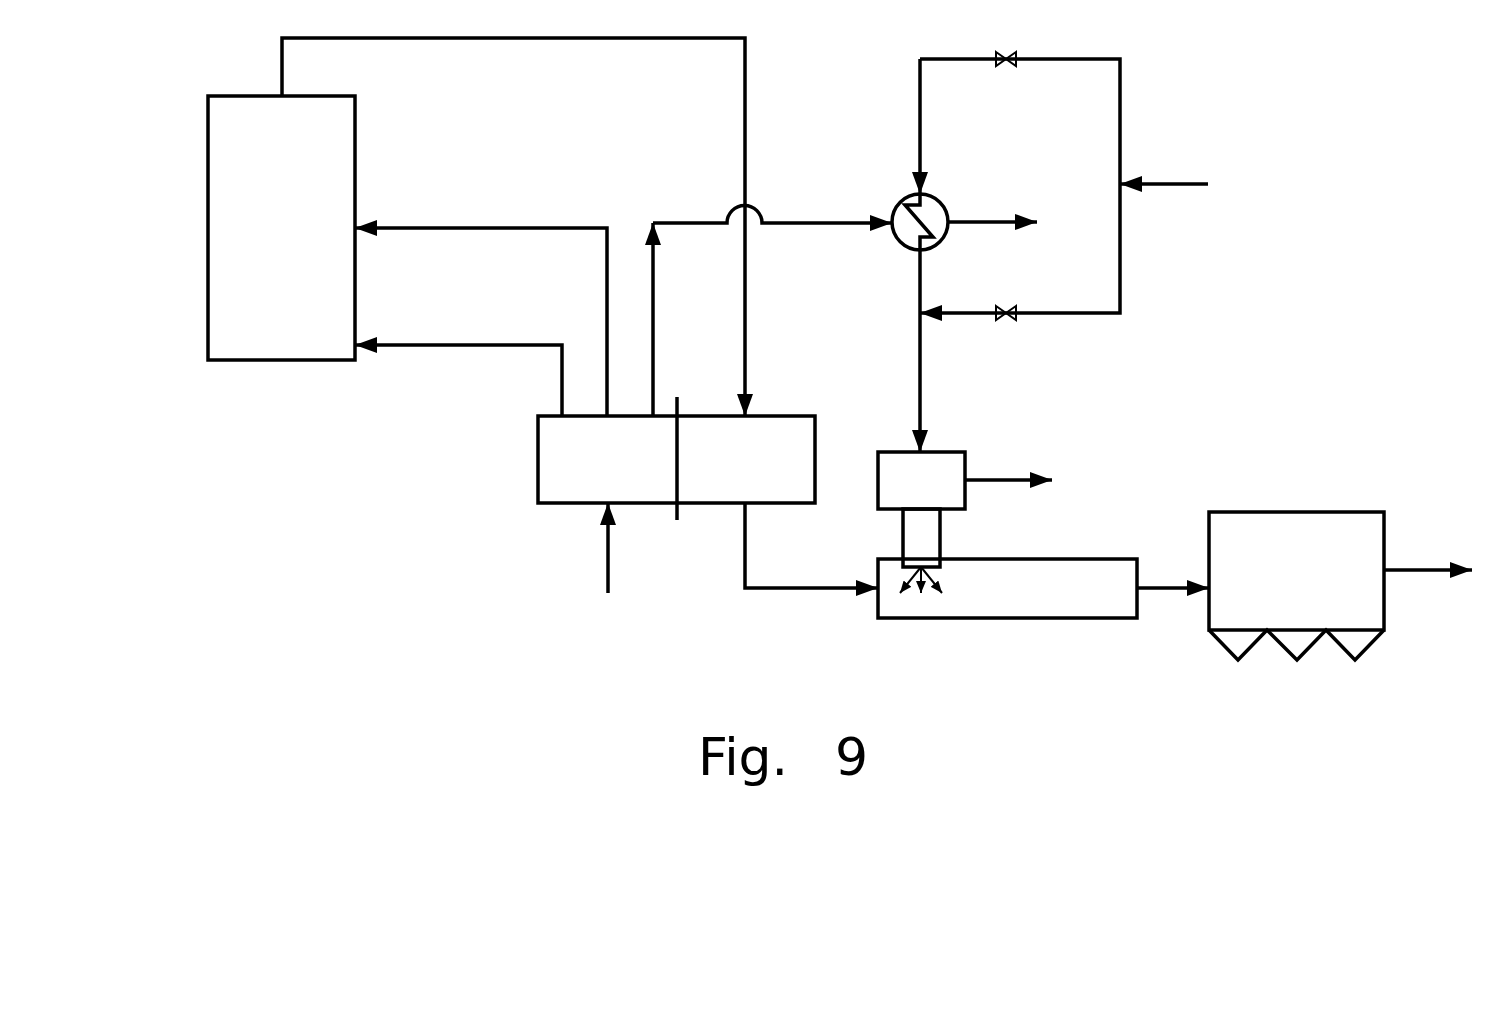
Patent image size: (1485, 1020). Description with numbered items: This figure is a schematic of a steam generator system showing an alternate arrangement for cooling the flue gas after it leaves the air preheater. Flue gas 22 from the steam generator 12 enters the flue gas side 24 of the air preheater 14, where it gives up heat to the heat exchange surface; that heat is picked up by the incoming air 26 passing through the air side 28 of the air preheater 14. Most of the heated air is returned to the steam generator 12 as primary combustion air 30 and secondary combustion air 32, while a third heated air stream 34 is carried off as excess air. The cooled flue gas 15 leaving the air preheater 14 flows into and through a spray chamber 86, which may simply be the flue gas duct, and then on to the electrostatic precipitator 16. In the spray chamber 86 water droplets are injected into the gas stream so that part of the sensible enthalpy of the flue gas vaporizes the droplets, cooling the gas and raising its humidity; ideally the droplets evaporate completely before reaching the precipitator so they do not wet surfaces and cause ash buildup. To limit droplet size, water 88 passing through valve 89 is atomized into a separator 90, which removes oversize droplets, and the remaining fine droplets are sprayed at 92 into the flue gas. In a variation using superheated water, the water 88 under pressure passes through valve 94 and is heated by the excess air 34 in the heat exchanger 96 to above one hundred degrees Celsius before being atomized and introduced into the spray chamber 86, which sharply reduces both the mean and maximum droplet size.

The steam generator 12 is at (250, 360).
The flue gas 22 is at (485, 38).
The secondary combustion air 32 is at (487, 228).
The primary combustion air 30 is at (428, 345).
The third heated air stream 34 is at (653, 307).
The air preheater 14 is at (659, 432).
The air side 28 is at (550, 435).
The flue gas side 24 is at (783, 442).
The incoming air 26 is at (608, 557).
The flue gas 15 is at (745, 537).
The heat exchanger 96 is at (900, 202).
The valve 94 is at (1006, 62).
The valve 89 is at (1006, 308).
The water 88 is at (1183, 184).
The separator 90 is at (960, 452).
The spray 92 is at (935, 538).
The spray chamber 86 is at (1065, 618).
The electrostatic precipitator 16 is at (1317, 520).